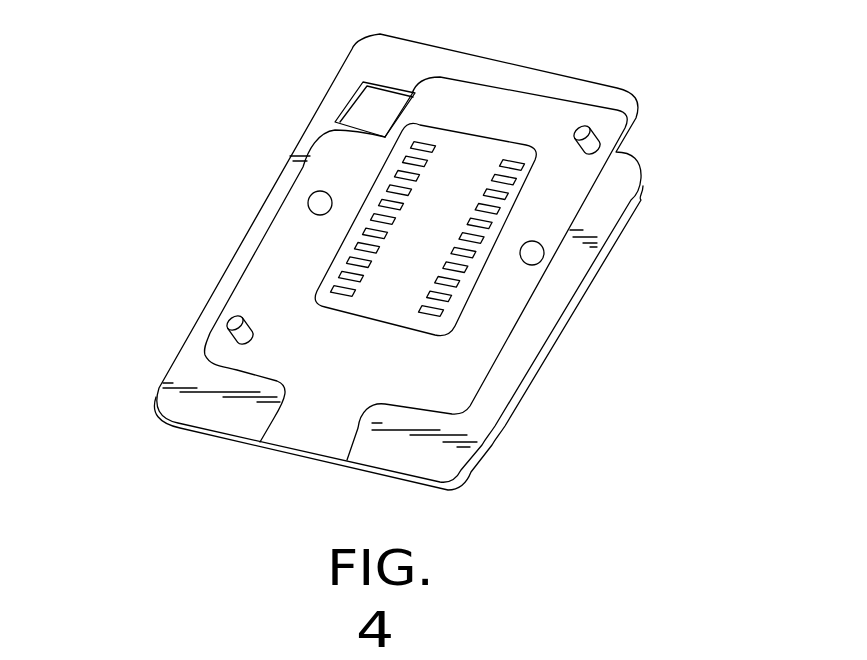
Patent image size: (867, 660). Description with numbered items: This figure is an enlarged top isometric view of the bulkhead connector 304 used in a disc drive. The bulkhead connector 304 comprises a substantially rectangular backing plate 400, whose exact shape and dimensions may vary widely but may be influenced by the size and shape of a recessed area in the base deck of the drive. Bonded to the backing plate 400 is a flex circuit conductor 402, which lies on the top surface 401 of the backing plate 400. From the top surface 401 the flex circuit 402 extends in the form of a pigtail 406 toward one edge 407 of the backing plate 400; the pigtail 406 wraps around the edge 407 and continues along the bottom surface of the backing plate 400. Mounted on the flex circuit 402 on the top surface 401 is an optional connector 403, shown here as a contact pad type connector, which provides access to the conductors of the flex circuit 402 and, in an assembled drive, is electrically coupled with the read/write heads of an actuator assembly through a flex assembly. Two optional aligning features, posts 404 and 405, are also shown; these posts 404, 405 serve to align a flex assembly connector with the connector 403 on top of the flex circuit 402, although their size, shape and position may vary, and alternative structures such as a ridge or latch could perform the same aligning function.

The bulkhead connector 304 is at (172, 452).
The backing plate 400 is at (315, 104).
The top surface 401 is at (537, 322).
The flex circuit conductor 402 is at (567, 192).
The connector 403 is at (475, 143).
The post 404 is at (593, 140).
The post 405 is at (230, 333).
The pigtail 406 is at (323, 427).
The edge 407 is at (252, 443).